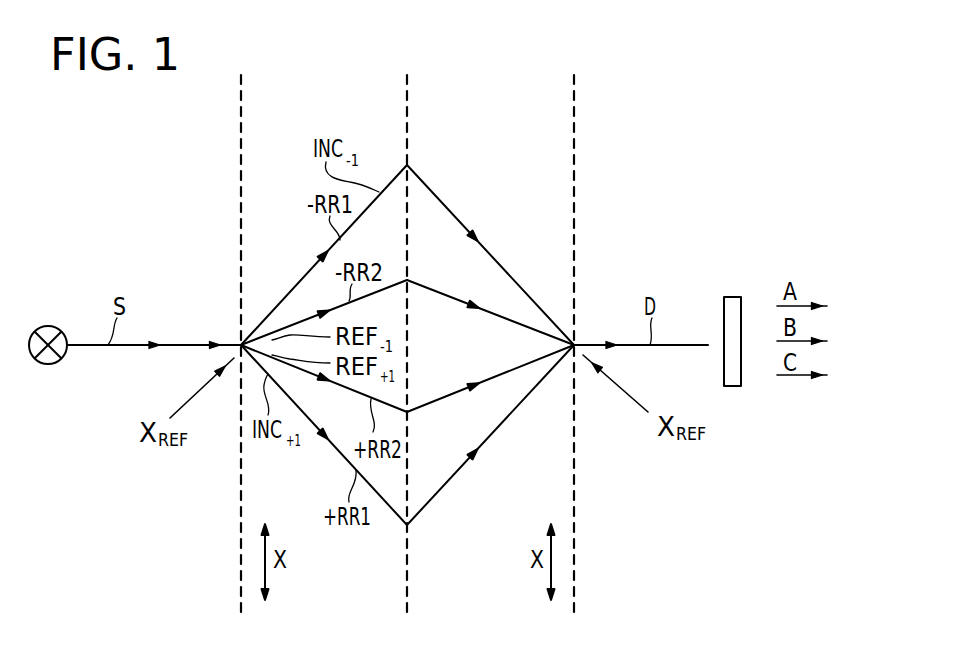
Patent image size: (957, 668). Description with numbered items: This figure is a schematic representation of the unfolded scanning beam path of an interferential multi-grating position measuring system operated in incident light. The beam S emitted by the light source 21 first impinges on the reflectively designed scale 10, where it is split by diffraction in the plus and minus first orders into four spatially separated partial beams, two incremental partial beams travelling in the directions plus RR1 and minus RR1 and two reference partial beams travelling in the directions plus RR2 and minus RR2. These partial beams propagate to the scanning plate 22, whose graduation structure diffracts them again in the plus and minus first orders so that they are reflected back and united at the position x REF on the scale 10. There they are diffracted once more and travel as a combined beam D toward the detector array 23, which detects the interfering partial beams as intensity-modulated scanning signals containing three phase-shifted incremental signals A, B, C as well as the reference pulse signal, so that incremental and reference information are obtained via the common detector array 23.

The scale 10 is at (241, 93).
The light source 21 is at (43, 358).
The scanning plate 22 is at (407, 578).
The detector array 23 is at (735, 305).